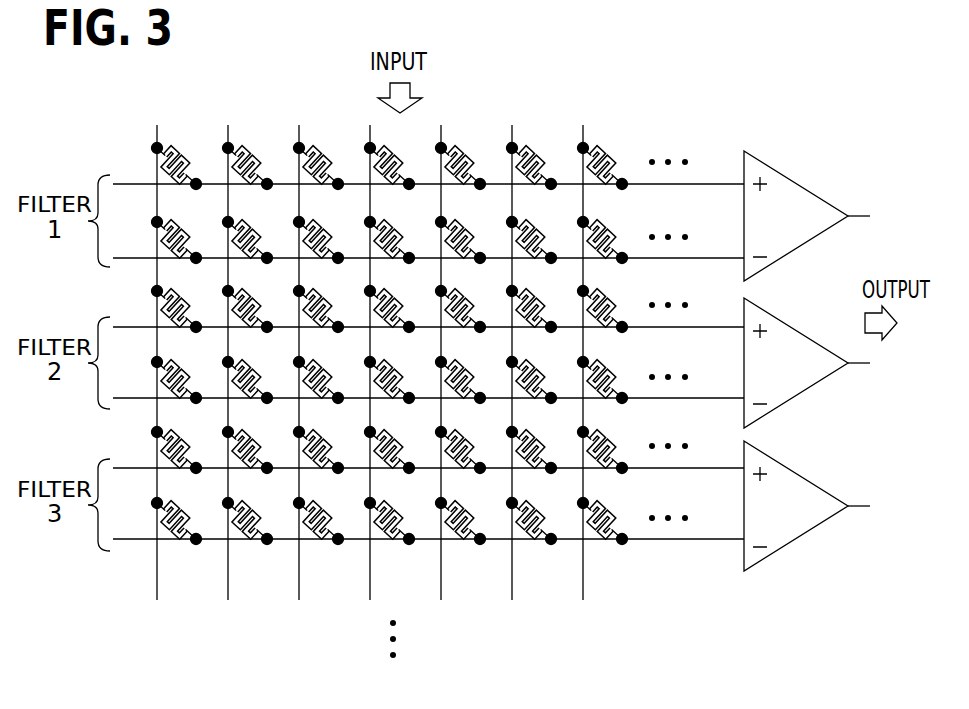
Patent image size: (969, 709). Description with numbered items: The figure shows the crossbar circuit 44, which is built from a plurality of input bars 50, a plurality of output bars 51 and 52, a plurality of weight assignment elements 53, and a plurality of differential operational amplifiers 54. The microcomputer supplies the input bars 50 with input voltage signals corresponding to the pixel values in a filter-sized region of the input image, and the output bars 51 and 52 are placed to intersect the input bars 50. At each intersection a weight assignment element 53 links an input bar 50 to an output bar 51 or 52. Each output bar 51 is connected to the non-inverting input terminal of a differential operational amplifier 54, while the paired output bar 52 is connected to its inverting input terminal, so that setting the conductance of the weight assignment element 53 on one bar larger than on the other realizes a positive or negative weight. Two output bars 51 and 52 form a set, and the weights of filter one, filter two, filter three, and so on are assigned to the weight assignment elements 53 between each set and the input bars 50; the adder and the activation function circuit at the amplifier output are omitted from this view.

The crossbar circuit 44 is at (648, 108).
The input bar 50 is at (160, 137).
The output bar 51 is at (704, 184).
The output bar 52 is at (704, 257).
The weight assignment element 53 is at (465, 157).
The differential operational amplifier 54 is at (782, 172).